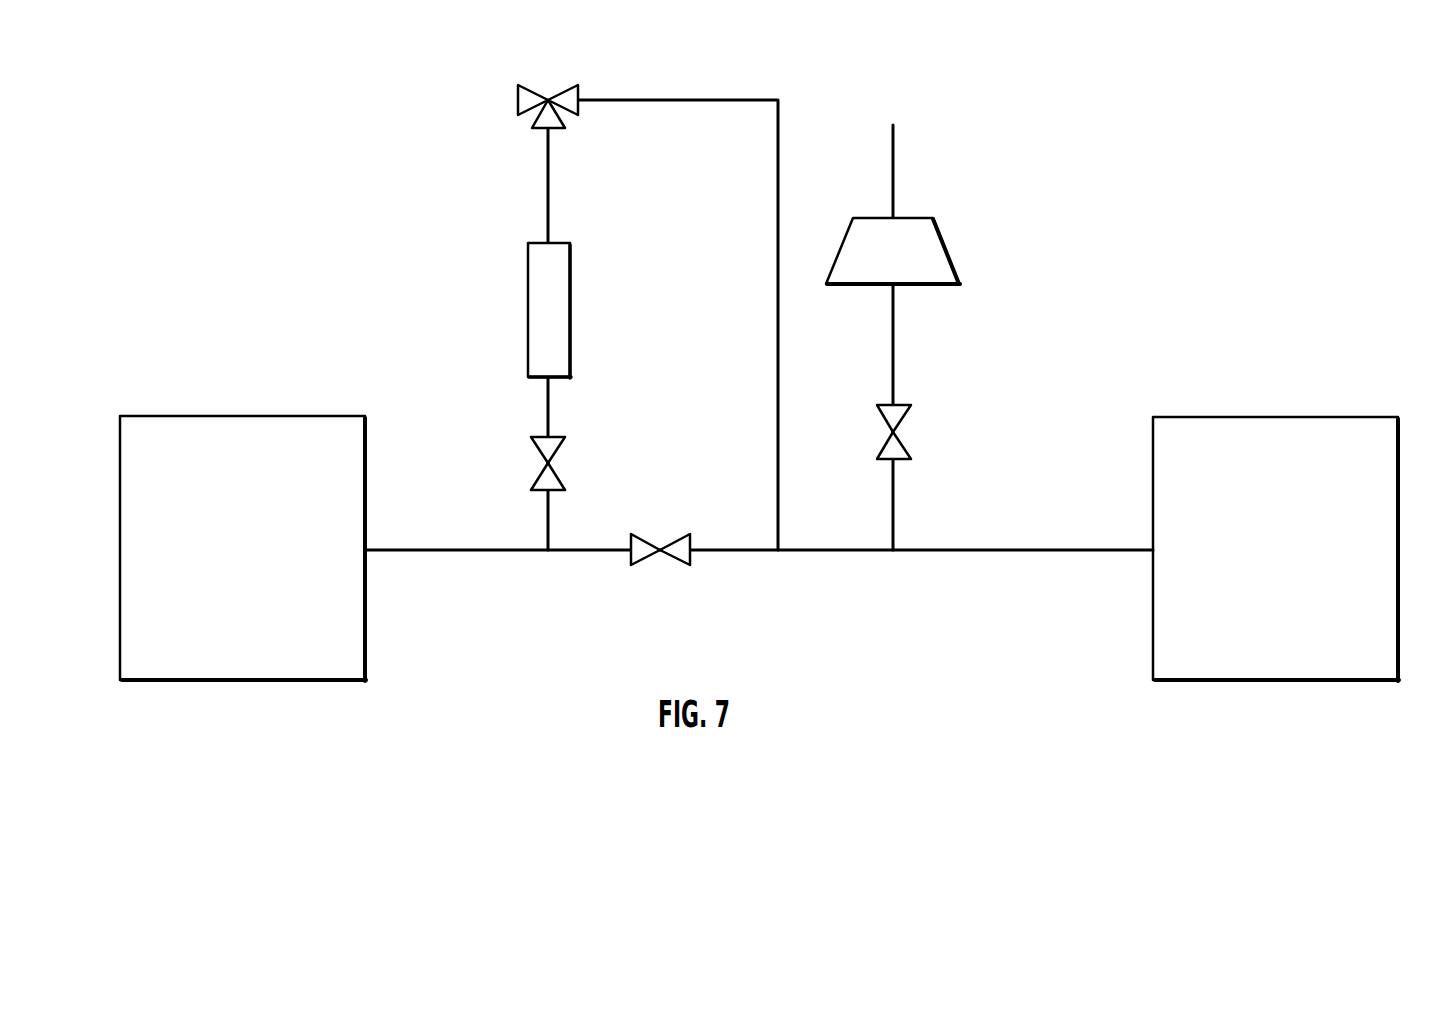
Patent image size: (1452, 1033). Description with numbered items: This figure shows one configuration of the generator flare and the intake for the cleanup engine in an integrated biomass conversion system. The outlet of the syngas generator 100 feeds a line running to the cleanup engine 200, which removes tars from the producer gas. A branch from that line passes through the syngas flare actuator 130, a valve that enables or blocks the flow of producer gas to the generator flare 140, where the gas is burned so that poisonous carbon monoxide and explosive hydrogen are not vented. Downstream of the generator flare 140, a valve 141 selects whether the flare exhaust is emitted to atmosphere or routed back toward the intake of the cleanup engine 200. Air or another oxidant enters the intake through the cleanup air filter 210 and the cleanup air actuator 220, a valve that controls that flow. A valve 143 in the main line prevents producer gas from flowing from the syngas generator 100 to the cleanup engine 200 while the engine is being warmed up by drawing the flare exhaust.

The syngas generator 100 is at (255, 416).
The syngas flare actuator 130 is at (560, 480).
The generator flare 140 is at (570, 306).
The valve 141 is at (560, 92).
The valve 143 is at (666, 557).
The cleanup engine 200 is at (1400, 440).
The cleanup air filter 210 is at (952, 263).
The cleanup air actuator 220 is at (905, 443).